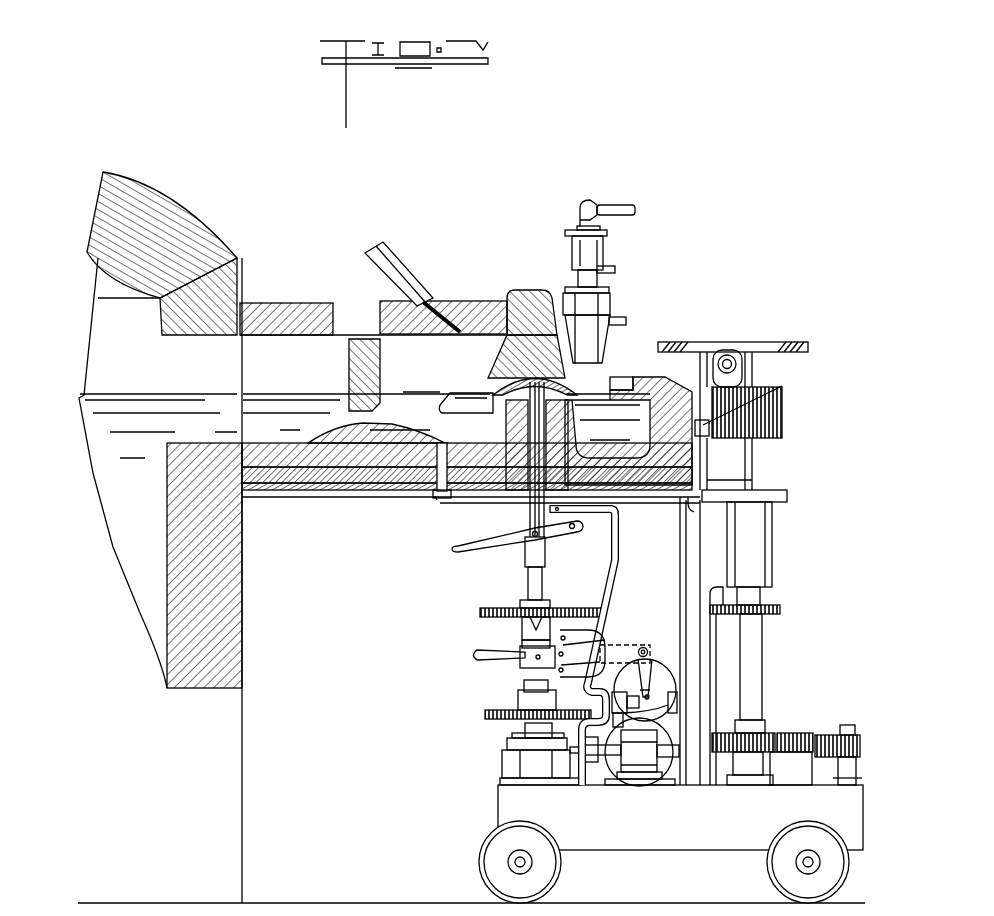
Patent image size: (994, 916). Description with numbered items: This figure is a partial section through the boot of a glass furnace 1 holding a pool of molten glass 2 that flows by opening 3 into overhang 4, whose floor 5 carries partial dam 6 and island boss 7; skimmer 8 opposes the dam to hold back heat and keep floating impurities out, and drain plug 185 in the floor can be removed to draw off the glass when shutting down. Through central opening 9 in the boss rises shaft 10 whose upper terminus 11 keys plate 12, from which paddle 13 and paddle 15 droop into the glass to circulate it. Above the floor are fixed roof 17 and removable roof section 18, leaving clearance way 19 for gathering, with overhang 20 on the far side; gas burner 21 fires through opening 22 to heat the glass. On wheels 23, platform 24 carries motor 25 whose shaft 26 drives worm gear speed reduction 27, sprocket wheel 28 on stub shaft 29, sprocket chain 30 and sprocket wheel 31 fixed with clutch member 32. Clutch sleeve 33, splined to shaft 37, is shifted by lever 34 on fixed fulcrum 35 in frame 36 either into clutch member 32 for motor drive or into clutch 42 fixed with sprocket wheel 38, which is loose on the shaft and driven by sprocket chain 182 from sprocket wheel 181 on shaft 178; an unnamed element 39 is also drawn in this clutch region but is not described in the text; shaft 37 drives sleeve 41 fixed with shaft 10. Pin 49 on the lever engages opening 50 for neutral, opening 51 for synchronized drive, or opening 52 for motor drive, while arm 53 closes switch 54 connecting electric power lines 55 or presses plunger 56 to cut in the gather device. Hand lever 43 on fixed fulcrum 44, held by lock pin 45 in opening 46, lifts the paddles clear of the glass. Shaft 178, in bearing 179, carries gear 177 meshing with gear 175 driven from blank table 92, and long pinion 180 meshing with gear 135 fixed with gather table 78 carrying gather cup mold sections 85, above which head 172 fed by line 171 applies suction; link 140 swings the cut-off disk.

The furnace 1 is at (215, 718).
The molten glass 2 is at (155, 394).
The opening 3 is at (208, 345).
The overhang 4 is at (310, 303).
The floor 5 is at (380, 492).
The partial dam 6 is at (315, 493).
The island boss 7 is at (447, 492).
The skimmer 8 is at (349, 372).
The central opening 9 is at (515, 492).
The shaft 10 is at (550, 492).
The upper terminus 11 is at (548, 400).
The plate 12 is at (505, 378).
The paddle 13 is at (456, 392).
The paddle 15 is at (595, 384).
The fixed roof 17 is at (498, 302).
The removable roof section 18 is at (528, 290).
The clearance way 19 is at (590, 372).
The overhang 20 is at (628, 380).
The gas burner 21 is at (400, 262).
The opening 22 is at (432, 300).
The wheels 23 is at (558, 878).
The platform 24 is at (655, 838).
The motor 25 is at (636, 780).
The shaft 26 is at (583, 762).
The worm gear speed reduction 27 is at (503, 765).
The sprocket wheel 28 is at (525, 728).
The stub shaft 29 is at (518, 700).
The sprocket chain 30 is at (512, 736).
The sprocket wheel 31 is at (485, 715).
The clutch member 32 is at (524, 686).
The clutch sleeve 33 is at (522, 643).
The lever 34 is at (477, 655).
The fixed fulcrum 35 is at (646, 648).
The frame 36 is at (696, 641).
The shaft 37 is at (542, 582).
The sprocket wheel 38 is at (520, 604).
The clutch 39 is at (522, 626).
The sleeve 41 is at (525, 552).
The clutch 42 is at (480, 613).
The hand lever 43 is at (458, 552).
The fixed fulcrum 44 is at (576, 526).
The lock pin 45 is at (580, 532).
The opening 46 is at (620, 525).
The pin 49 is at (585, 641).
The opening 50 is at (562, 654).
The opening 51 is at (575, 642).
The opening 52 is at (562, 670).
The arm 53 is at (648, 672).
The switch 54 is at (640, 695).
The electric power lines 55 is at (677, 702).
The plunger 56 is at (625, 720).
The table 78 is at (772, 342).
The gather cup mold sections 85 is at (612, 303).
The table 92 is at (812, 765).
The gear 135 is at (714, 422).
The link 140 is at (692, 508).
The line 171 is at (635, 196).
The head 172 is at (604, 255).
The gear 175 is at (808, 733).
The gear 177 is at (780, 733).
The shaft 178 is at (763, 668).
The bearing 179 is at (774, 550).
The long pinion 180 is at (786, 424).
The sprocket wheel 181 is at (764, 608).
The sprocket chain 182 is at (718, 596).
The drain plug 185 is at (440, 496).